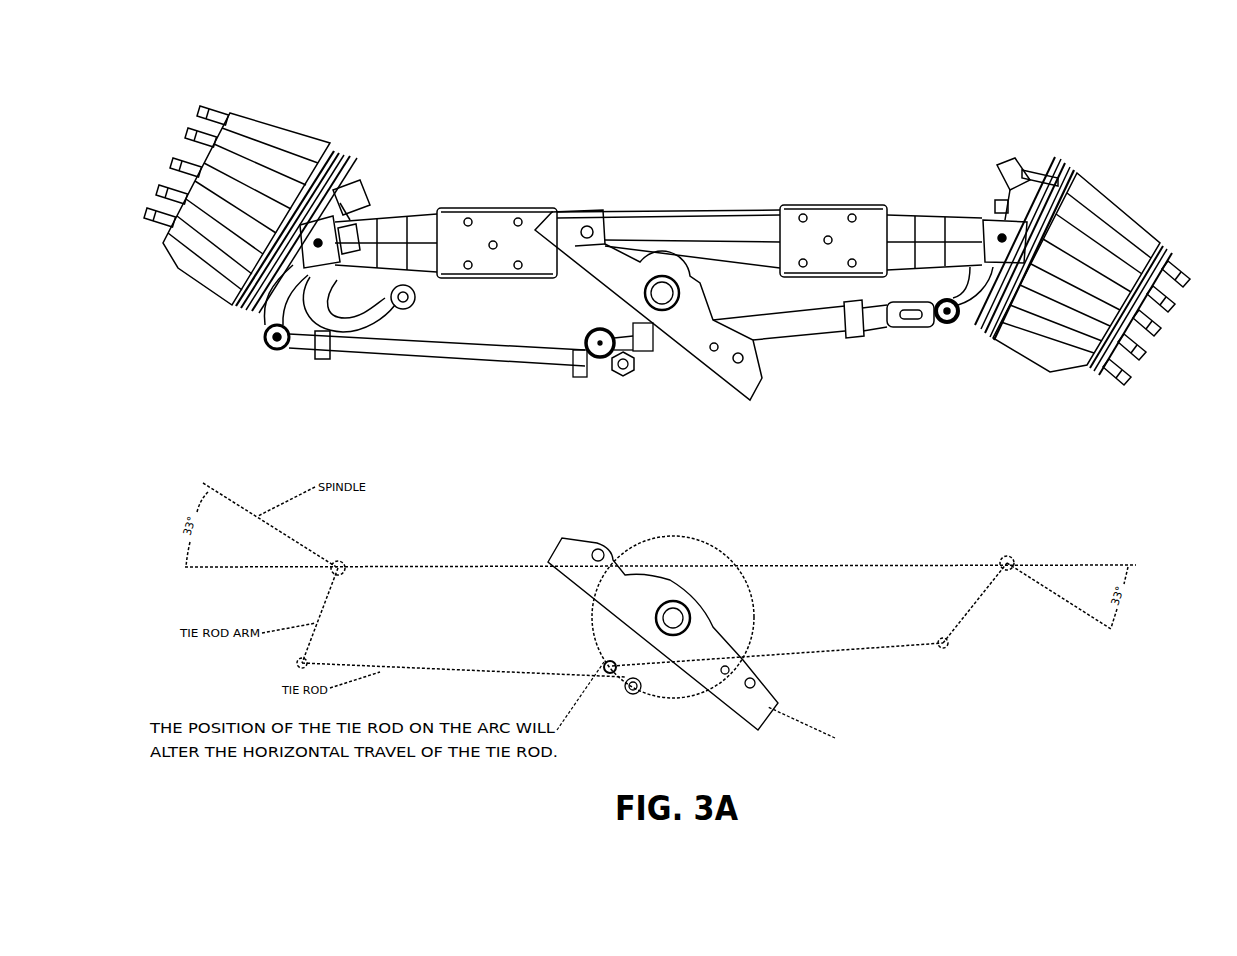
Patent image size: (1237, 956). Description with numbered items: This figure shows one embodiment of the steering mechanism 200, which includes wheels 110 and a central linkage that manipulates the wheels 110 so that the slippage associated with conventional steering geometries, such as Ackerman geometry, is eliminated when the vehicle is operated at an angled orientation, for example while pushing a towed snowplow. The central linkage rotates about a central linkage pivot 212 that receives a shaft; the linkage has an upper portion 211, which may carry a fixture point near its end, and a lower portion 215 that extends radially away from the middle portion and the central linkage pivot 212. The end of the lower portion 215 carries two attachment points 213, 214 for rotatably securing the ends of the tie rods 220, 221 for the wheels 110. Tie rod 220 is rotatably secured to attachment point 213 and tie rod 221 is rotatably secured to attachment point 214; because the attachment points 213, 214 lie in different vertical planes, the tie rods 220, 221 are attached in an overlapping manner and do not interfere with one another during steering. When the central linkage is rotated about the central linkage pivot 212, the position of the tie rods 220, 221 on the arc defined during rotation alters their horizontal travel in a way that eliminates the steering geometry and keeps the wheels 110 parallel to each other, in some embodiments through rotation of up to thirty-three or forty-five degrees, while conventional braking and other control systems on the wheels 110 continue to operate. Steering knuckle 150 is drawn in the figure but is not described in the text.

The wheels 110 is at (282, 138).
The steering knuckle 150 is at (320, 245).
The steering mechanism 200 is at (923, 96).
The upper portion 211 is at (620, 258).
The central linkage pivot 212 is at (665, 290).
The attachment point 213 is at (590, 366).
The attachment point 214 is at (628, 372).
The lower portion 215 is at (607, 662).
The tie rod 220 is at (812, 323).
The tie rod 221 is at (433, 350).